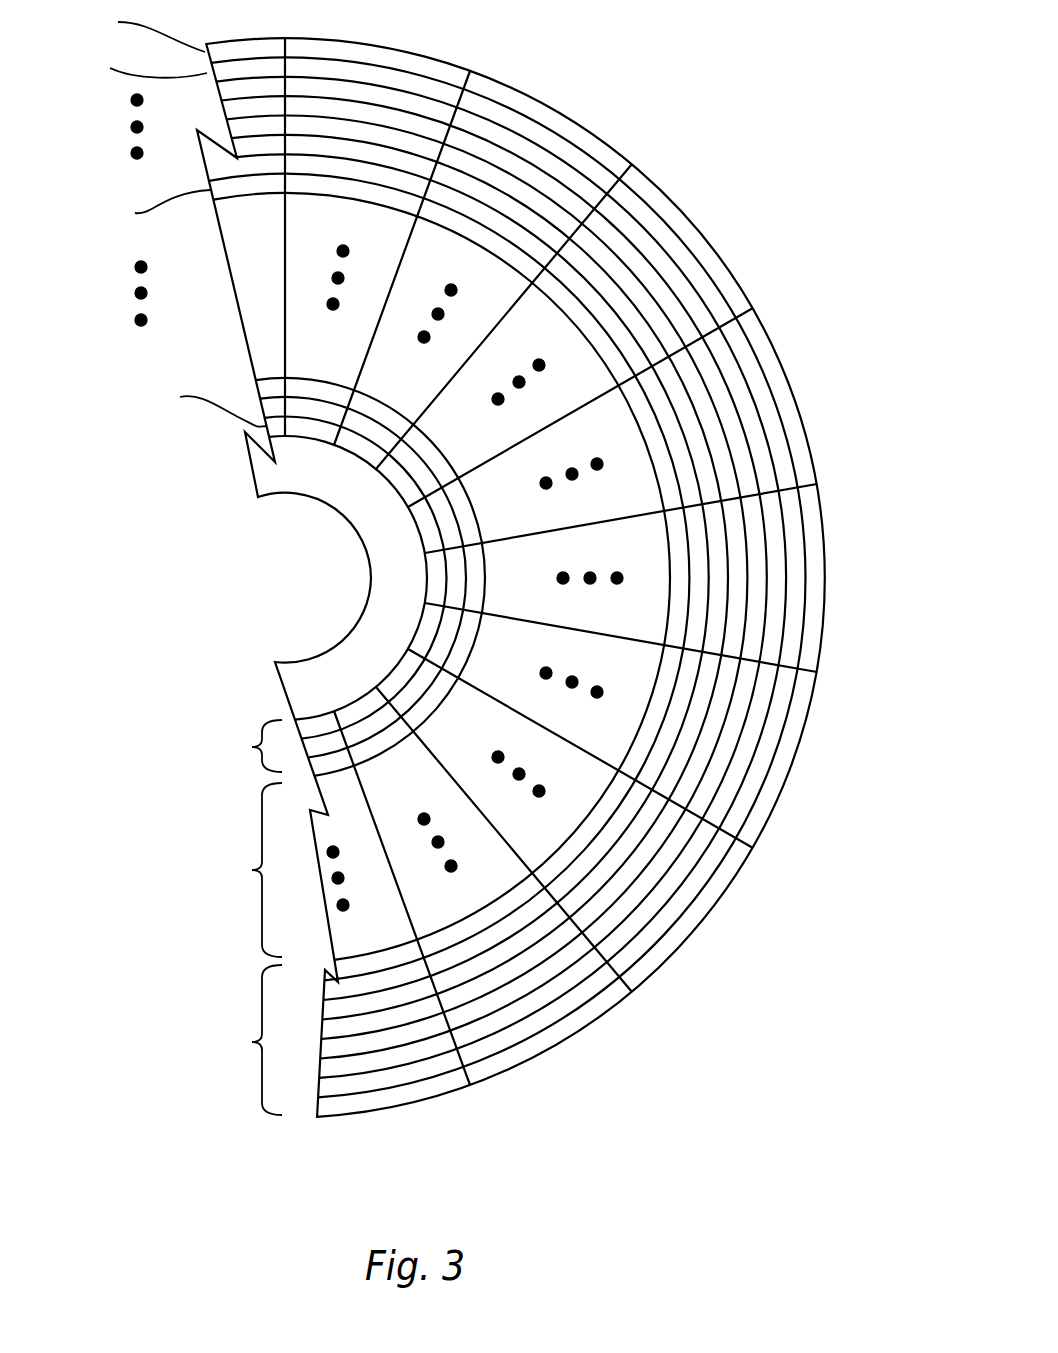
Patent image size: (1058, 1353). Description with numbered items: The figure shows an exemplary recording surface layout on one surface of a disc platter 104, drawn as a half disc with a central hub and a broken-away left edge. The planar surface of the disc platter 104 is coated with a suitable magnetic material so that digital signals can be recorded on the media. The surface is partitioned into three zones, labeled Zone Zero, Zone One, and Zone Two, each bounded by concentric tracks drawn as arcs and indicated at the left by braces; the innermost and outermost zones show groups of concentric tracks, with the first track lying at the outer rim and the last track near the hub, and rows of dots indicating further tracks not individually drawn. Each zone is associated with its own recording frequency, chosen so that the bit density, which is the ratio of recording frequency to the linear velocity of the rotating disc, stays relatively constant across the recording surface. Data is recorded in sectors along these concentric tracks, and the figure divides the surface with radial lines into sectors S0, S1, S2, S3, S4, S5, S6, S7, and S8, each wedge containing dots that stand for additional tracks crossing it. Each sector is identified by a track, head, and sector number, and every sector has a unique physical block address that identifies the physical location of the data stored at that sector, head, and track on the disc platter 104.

The disc platter 104 is at (497, 560).
The sector S0 is at (303, 250).
The sector S1 is at (448, 259).
The sector S2 is at (553, 334).
The sector S3 is at (628, 429).
The sector S4 is at (663, 554).
The sector S5 is at (648, 679).
The sector S6 is at (601, 791).
The sector S7 is at (513, 878).
The sector S8 is at (403, 936).